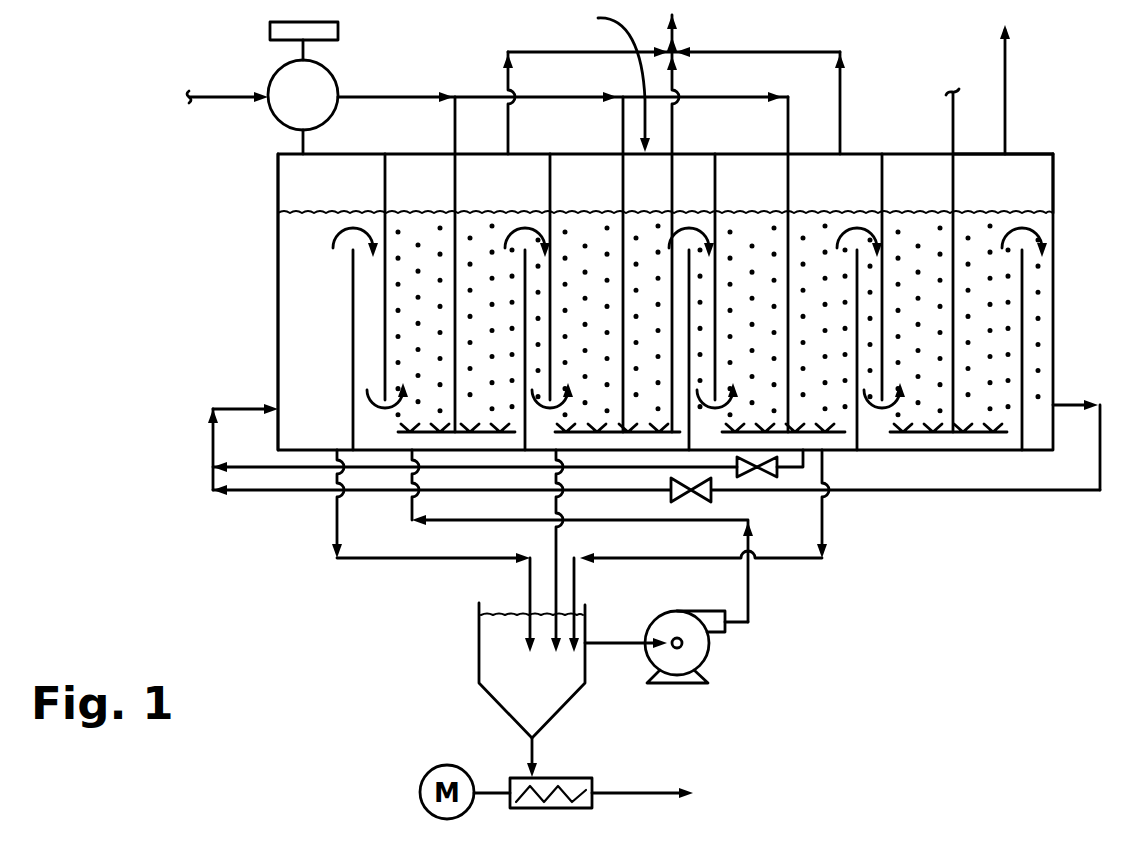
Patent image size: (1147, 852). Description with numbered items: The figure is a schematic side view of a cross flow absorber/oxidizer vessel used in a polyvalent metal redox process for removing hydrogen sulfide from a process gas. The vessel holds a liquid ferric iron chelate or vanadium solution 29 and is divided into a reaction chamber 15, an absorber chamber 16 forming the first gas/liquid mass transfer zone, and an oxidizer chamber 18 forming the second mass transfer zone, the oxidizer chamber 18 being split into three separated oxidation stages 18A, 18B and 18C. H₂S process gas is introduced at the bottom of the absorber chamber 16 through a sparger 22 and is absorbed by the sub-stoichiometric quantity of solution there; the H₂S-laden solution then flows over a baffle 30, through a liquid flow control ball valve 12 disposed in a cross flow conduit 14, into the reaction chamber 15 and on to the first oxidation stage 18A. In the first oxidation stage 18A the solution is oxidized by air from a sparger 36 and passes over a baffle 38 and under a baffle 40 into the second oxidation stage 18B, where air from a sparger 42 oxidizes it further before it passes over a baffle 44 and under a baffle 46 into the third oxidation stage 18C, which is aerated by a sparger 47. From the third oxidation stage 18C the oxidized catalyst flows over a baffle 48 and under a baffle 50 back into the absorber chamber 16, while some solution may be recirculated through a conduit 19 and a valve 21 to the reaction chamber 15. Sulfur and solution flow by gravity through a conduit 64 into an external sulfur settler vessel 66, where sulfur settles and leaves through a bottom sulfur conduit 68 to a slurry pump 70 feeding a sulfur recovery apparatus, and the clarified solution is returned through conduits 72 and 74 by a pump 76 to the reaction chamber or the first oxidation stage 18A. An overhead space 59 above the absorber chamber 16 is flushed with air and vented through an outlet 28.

The liquid flow control ball valve 12 is at (712, 490).
The conduit 14 is at (381, 490).
The reaction chamber 15 is at (278, 265).
The absorber chamber 16 is at (920, 170).
The oxidizer chamber 18 is at (610, 78).
The first oxidation stage 18A is at (408, 163).
The second oxidation stage 18B is at (596, 173).
The third oxidation stage 18C is at (750, 172).
The conduit 19 is at (820, 517).
The valve 21 is at (772, 478).
The sparger 22 is at (978, 433).
The outlet 28 is at (1010, 152).
The liquid solution 29 is at (973, 227).
The baffle 30 is at (1022, 294).
The sparger 36 is at (465, 432).
The baffle 38 is at (525, 265).
The baffle 40 is at (550, 173).
The sparger 42 is at (588, 433).
The baffle 44 is at (689, 282).
The baffle 46 is at (715, 173).
The sparger 47 is at (823, 433).
The baffle 48 is at (857, 267).
The baffle 50 is at (882, 173).
The overhead space 59 is at (1037, 173).
The conduit 64 is at (337, 512).
The sulfur settler vessel 66 is at (477, 660).
The bottom sulfur conduit 68 is at (538, 750).
The slurry pump 70 is at (517, 776).
The conduit 72 is at (613, 647).
The conduit 74 is at (640, 520).
The pump 76 is at (697, 650).